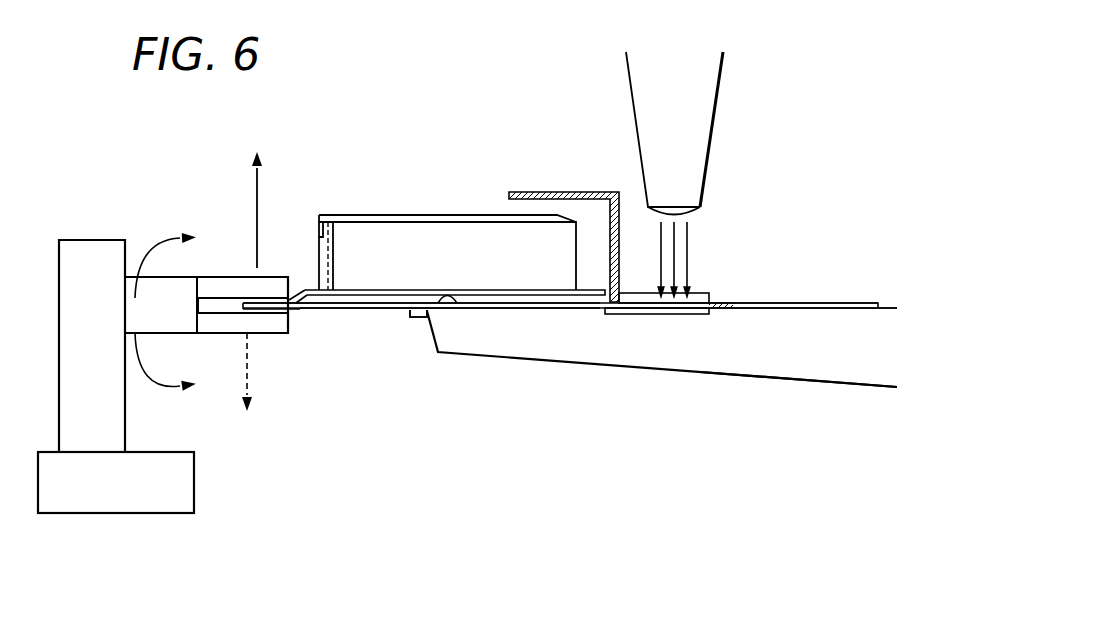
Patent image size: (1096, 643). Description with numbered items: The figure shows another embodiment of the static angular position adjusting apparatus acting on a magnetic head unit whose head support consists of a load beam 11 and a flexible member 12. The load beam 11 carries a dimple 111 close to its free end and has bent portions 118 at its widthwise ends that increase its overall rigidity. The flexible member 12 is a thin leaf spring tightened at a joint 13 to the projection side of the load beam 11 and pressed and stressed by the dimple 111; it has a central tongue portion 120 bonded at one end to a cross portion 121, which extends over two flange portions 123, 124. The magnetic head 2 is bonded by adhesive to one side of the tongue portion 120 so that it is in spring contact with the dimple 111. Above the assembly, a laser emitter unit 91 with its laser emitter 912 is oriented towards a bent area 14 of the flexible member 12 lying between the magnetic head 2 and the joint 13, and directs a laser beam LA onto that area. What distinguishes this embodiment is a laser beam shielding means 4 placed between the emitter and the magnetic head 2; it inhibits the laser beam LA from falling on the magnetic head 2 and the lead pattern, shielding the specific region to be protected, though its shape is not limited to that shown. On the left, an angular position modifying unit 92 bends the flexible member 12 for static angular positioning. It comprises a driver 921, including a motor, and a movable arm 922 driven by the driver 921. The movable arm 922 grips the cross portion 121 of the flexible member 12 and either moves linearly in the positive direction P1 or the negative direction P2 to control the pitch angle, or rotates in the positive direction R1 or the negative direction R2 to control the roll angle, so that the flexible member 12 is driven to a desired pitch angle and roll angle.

The magnetic head 2 is at (363, 225).
The laser beam shielding means 4 is at (540, 192).
The load beam 11 is at (666, 380).
The flexible member 12 is at (341, 364).
The joint 13 is at (731, 302).
The bent area 14 is at (618, 314).
The laser emitter unit 91 is at (614, 101).
The angular position modifying unit 92 is at (218, 481).
The dimple 111 is at (447, 292).
The bent portions 118 is at (803, 379).
The tongue portion 120 is at (513, 295).
The cross portion 121 is at (274, 310).
The flange portion 123 is at (368, 309).
The flange portion 124 is at (418, 313).
The laser emitter 912 is at (707, 112).
The driver 921 is at (78, 247).
The movable arm 922 is at (227, 282).
The laser beam LA is at (690, 232).
The positive linear direction P1 is at (259, 192).
The negative linear direction P2 is at (245, 353).
The positive rotation direction R1 is at (160, 236).
The negative rotation direction R2 is at (153, 391).